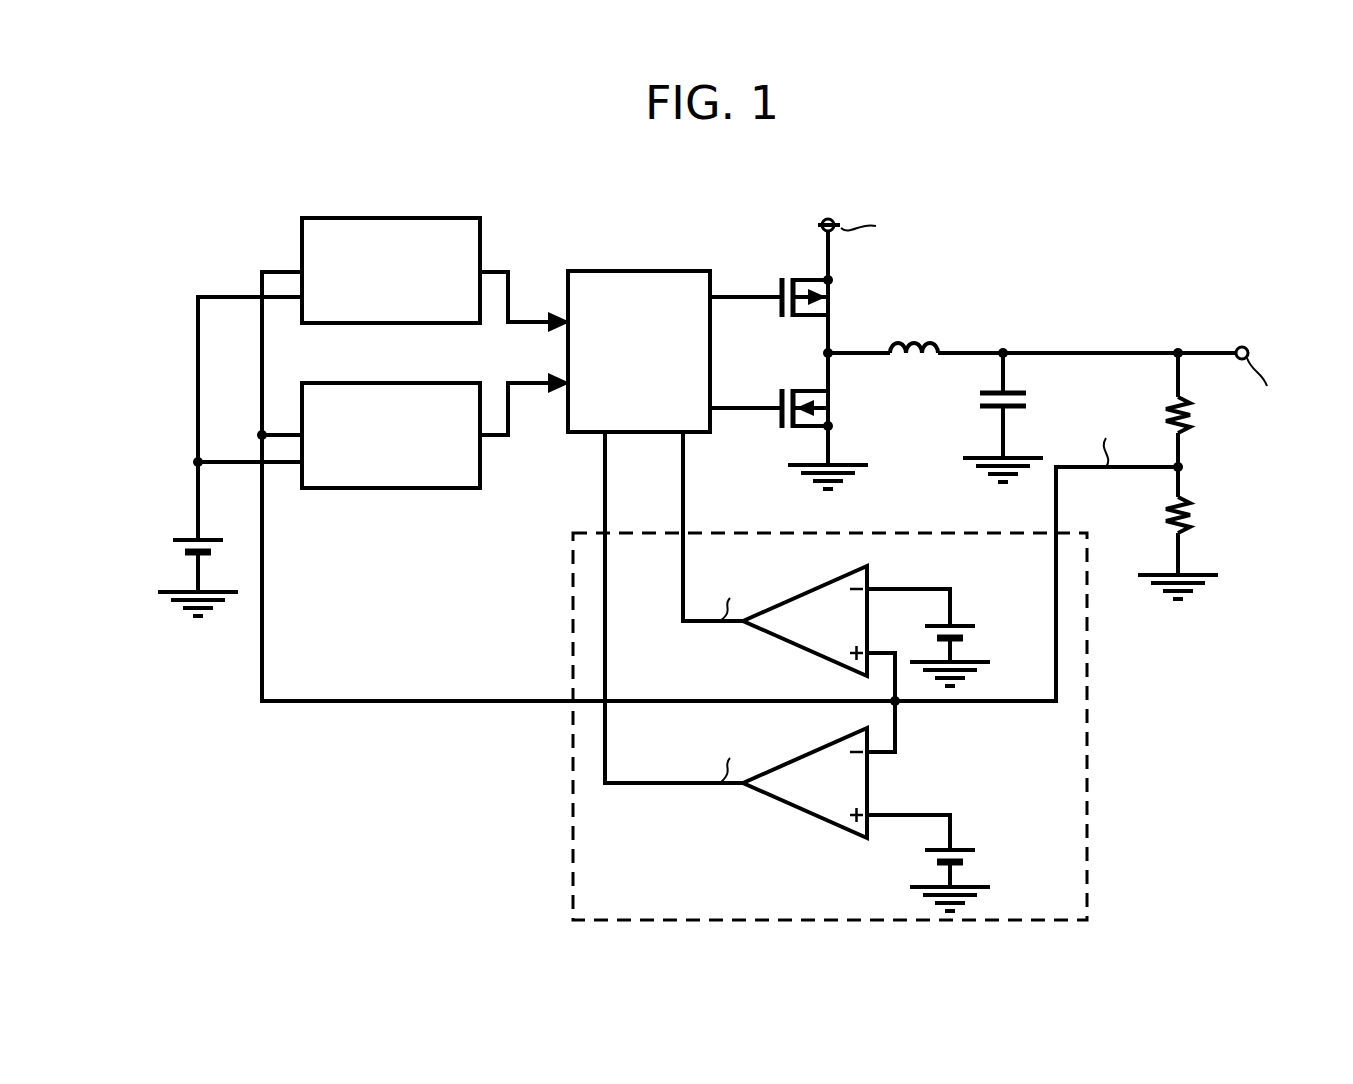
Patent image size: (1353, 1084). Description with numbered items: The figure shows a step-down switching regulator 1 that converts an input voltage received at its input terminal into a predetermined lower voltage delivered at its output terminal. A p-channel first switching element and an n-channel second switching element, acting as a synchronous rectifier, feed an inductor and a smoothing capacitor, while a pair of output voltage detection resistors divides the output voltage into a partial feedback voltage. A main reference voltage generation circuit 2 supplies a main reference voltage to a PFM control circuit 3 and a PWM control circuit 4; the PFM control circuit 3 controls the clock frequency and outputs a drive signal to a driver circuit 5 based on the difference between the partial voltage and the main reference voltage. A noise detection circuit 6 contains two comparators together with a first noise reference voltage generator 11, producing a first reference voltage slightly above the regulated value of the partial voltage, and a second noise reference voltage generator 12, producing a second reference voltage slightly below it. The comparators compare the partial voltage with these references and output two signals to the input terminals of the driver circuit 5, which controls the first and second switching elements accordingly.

The switching regulator 1 is at (1025, 232).
The main reference voltage generation circuit 2 is at (160, 557).
The PFM control circuit 3 is at (457, 218).
The PWM control circuit 4 is at (457, 383).
The driver circuit 5 is at (667, 271).
The noise detection circuit 6 is at (788, 726).
The first noise reference voltage generator 11 is at (988, 636).
The second noise reference voltage generator 12 is at (996, 862).